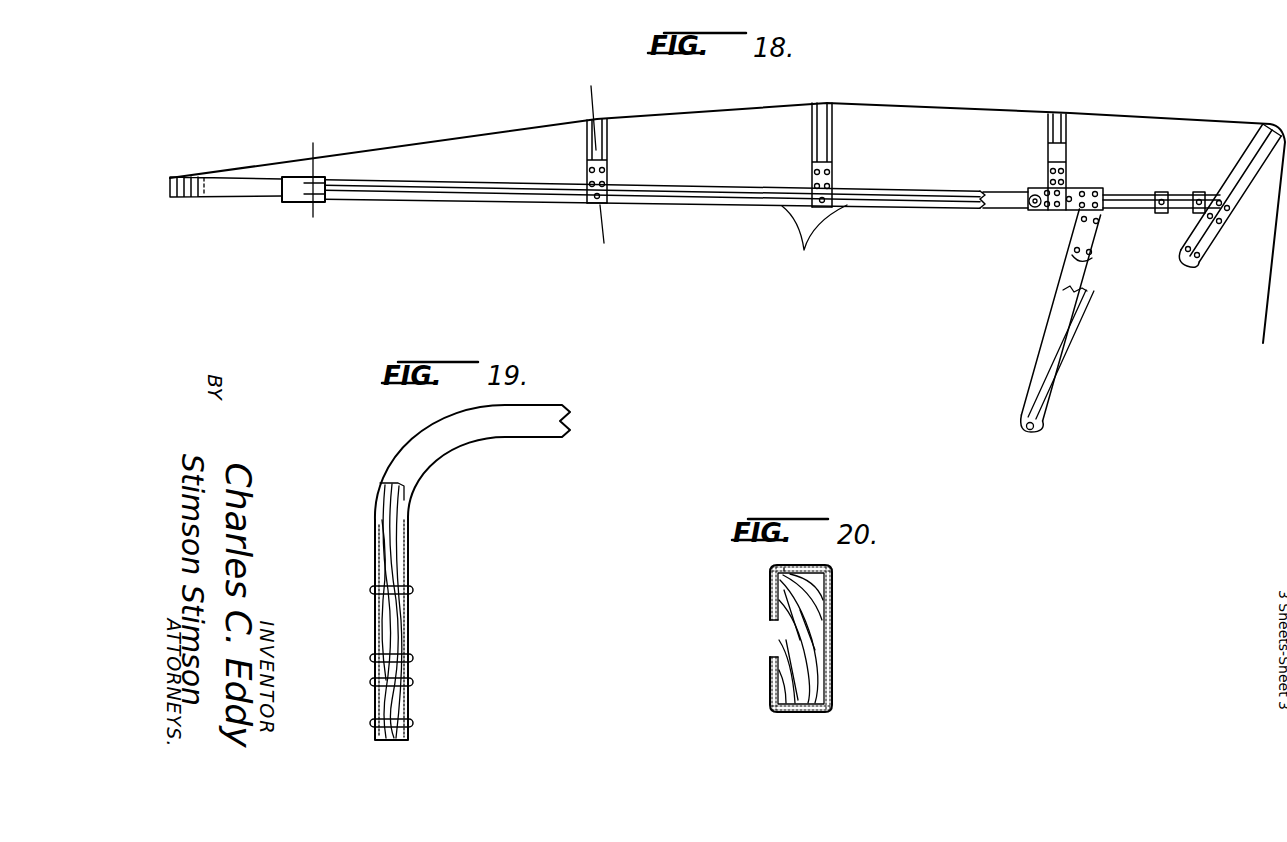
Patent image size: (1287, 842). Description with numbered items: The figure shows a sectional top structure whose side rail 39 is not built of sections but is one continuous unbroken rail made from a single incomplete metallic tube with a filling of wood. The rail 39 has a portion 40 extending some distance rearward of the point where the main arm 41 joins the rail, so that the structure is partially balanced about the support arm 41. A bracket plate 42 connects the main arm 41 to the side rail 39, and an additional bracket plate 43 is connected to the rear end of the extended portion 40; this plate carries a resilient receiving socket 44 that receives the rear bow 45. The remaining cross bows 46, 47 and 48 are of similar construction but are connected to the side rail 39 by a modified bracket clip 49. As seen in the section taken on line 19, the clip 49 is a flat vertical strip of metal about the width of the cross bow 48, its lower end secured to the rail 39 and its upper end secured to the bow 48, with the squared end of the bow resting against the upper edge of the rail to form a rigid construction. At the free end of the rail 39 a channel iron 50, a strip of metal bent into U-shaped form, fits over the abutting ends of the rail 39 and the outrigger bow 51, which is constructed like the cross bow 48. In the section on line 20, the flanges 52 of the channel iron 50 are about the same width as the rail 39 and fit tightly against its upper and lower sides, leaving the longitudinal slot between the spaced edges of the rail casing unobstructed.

In FIG. 18, the section line 19— 19 is at (601, 172).
In FIG. 18, the section line 20— 20 is at (314, 182).
In FIG. 18, the side rail 39 is at (814, 247).
In FIG. 19, the side rail 39 is at (411, 698).
In FIG. 20, the side rail 39 is at (808, 622).
In FIG. 18, the rearwardly extending rail portion 40 is at (1142, 194).
In FIG. 18, the main arm 41 is at (1082, 330).
In FIG. 18, the bracket plate 42 is at (1090, 232).
In FIG. 18, the additional bracket plate 43 is at (1213, 193).
In FIG. 18, the resilient receiving socket 44 is at (1226, 223).
In FIG. 18, the rear bow 45 is at (1257, 163).
In FIG. 18, the cross bow 46 is at (1068, 116).
In FIG. 18, the cross bow 47 is at (832, 118).
In FIG. 18, the cross bow 48 is at (607, 135).
In FIG. 19, the cross bow 48 is at (447, 447).
In FIG. 19, the bracket clip 49 is at (413, 623).
In FIG. 18, the channel iron 50 is at (290, 203).
In FIG. 20, the channel iron 50 is at (834, 567).
In FIG. 18, the outrigger bow 51 is at (222, 190).
In FIG. 20, the flanges 52 is at (801, 724).